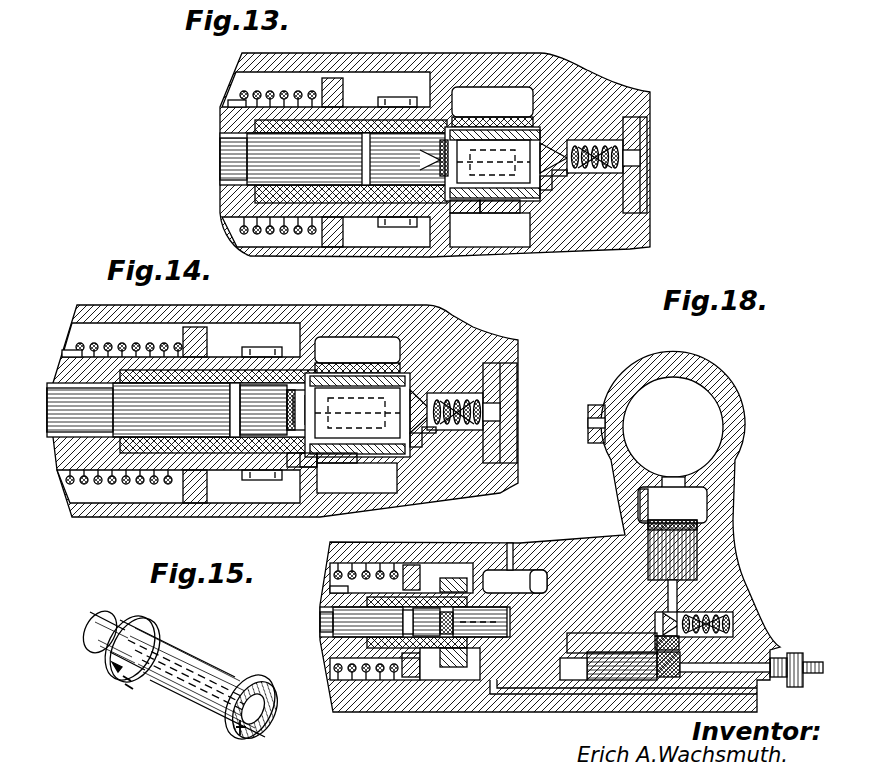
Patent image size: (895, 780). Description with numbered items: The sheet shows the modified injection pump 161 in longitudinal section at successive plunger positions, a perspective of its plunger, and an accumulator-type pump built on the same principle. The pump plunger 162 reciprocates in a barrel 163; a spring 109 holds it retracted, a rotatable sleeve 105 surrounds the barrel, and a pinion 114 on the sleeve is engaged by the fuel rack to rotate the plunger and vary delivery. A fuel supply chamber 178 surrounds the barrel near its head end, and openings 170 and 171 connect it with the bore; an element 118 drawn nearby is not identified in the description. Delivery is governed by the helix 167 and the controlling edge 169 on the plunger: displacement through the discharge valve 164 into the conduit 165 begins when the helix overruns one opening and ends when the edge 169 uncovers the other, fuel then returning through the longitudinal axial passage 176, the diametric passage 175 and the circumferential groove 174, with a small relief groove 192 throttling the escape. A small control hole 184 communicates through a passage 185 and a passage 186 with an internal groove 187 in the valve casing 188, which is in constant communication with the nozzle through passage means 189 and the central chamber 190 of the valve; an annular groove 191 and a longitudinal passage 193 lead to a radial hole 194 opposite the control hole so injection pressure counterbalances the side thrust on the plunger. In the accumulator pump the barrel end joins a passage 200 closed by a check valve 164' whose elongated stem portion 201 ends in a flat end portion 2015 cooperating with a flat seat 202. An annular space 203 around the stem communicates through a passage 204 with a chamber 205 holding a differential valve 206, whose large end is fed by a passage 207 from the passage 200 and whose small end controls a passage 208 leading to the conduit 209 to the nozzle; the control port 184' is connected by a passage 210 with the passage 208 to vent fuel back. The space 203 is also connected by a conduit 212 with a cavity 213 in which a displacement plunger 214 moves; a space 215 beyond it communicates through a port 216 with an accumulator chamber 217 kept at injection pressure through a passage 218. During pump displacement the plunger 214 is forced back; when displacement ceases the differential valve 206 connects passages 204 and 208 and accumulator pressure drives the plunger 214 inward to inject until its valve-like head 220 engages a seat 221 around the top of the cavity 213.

In FIG. 13, the rotatable sleeve 105 is at (236, 104).
In FIG. 14, the rotatable sleeve 105 is at (150, 360).
In FIG. 18, the rotatable sleeve 105 is at (330, 583).
In FIG. 13, the spring 109 is at (242, 95).
In FIG. 14, the spring 109 is at (112, 343).
In FIG. 18, the spring 109 is at (337, 578).
In FIG. 13, the pinion 114 is at (343, 103).
In FIG. 14, the pinion 114 is at (227, 333).
In FIG. 18, the pinion 114 is at (443, 600).
In FIG. 18, the passage 118 is at (510, 565).
In FIG. 13, the injection pump 161 is at (465, 60).
In FIG. 14, the injection pump 161 is at (335, 306).
In FIG. 18, the injection pump 161 is at (500, 620).
In FIG. 13, the pump plunger 162 is at (518, 153).
In FIG. 14, the pump plunger 162 is at (377, 390).
In FIG. 15, the pump plunger 162 is at (222, 650).
In FIG. 18, the pump plunger 162 is at (430, 623).
In FIG. 13, the pump barrel 163 is at (410, 135).
In FIG. 14, the pump barrel 163 is at (275, 377).
In FIG. 13, the discharge valve 164 is at (610, 113).
In FIG. 14, the discharge valve 164 is at (470, 369).
In FIG. 18, the check valve 164' is at (737, 615).
In FIG. 13, the conduit 165 is at (640, 158).
In FIG. 14, the conduit 165 is at (500, 408).
In FIG. 13, the helix 167 is at (490, 229).
In FIG. 14, the helix 167 is at (395, 440).
In FIG. 15, the helix 167 is at (267, 712).
In FIG. 13, the controlling edge 169 is at (443, 147).
In FIG. 14, the controlling edge 169 is at (297, 417).
In FIG. 15, the controlling edge 169 is at (160, 620).
In FIG. 18, the controlling edge 169 is at (447, 612).
In FIG. 18, the opening 170 is at (535, 581).
In FIG. 18, the opening 171 is at (515, 581).
In FIG. 13, the circumferential groove 174 is at (436, 195).
In FIG. 14, the circumferential groove 174 is at (300, 440).
In FIG. 15, the circumferential groove 174 is at (120, 668).
In FIG. 15, the diametric passage 175 is at (97, 657).
In FIG. 15, the longitudinal axial passage 176 is at (240, 727).
In FIG. 13, the fuel supply chamber 178 is at (505, 140).
In FIG. 14, the fuel supply chamber 178 is at (350, 393).
In FIG. 18, the fuel supply chamber 178 is at (449, 582).
In FIG. 13, the control hole 184 is at (468, 239).
In FIG. 14, the control hole 184 is at (308, 498).
In FIG. 18, the control port 184' is at (466, 675).
In FIG. 13, the passage 185 is at (490, 205).
In FIG. 14, the passage 185 is at (355, 452).
In FIG. 13, the passage 186 is at (548, 190).
In FIG. 14, the passage 186 is at (427, 435).
In FIG. 13, the internal groove 187 is at (555, 178).
In FIG. 14, the internal groove 187 is at (433, 427).
In FIG. 13, the valve casing 188 is at (632, 152).
In FIG. 14, the valve casing 188 is at (487, 387).
In FIG. 13, the passage means 189 is at (635, 150).
In FIG. 14, the passage means 189 is at (433, 393).
In FIG. 13, the central chamber 190 is at (648, 160).
In FIG. 14, the central chamber 190 is at (500, 417).
In FIG. 13, the annular groove 191 is at (560, 117).
In FIG. 14, the annular groove 191 is at (427, 347).
In FIG. 13, the relief groove 192 is at (432, 178).
In FIG. 14, the relief groove 192 is at (303, 437).
In FIG. 15, the relief groove 192 is at (127, 680).
In FIG. 18, the relief groove 192 is at (447, 660).
In FIG. 13, the longitudinal passage 193 is at (497, 95).
In FIG. 14, the longitudinal passage 193 is at (337, 372).
In FIG. 13, the radial hole 194 is at (492, 102).
In FIG. 14, the radial hole 194 is at (310, 380).
In FIG. 18, the passage 200 is at (567, 623).
In FIG. 18, the elongated stem portion 201 is at (708, 612).
In FIG. 18, the flat end portion 2015 is at (658, 627).
In FIG. 18, the flat seat 202 is at (658, 582).
In FIG. 18, the annular space 203 is at (617, 665).
In FIG. 18, the passage 204 is at (663, 655).
In FIG. 18, the chamber 205 is at (740, 632).
In FIG. 18, the differential valve 206 is at (575, 718).
In FIG. 18, the passage 207 is at (560, 687).
In FIG. 18, the passage 208 is at (768, 650).
In FIG. 18, the conduit 209 is at (810, 660).
In FIG. 18, the passage 210 is at (710, 693).
In FIG. 18, the conduit 212 is at (670, 600).
In FIG. 18, the cavity 213 is at (657, 615).
In FIG. 18, the displacement plunger 214 is at (720, 533).
In FIG. 18, the space 215 is at (697, 500).
In FIG. 18, the port 216 is at (680, 480).
In FIG. 18, the accumulator chamber 217 is at (697, 403).
In FIG. 18, the passage 218 is at (593, 418).
In FIG. 18, the valve-like head 220 is at (672, 505).
In FIG. 18, the seat 221 is at (648, 490).